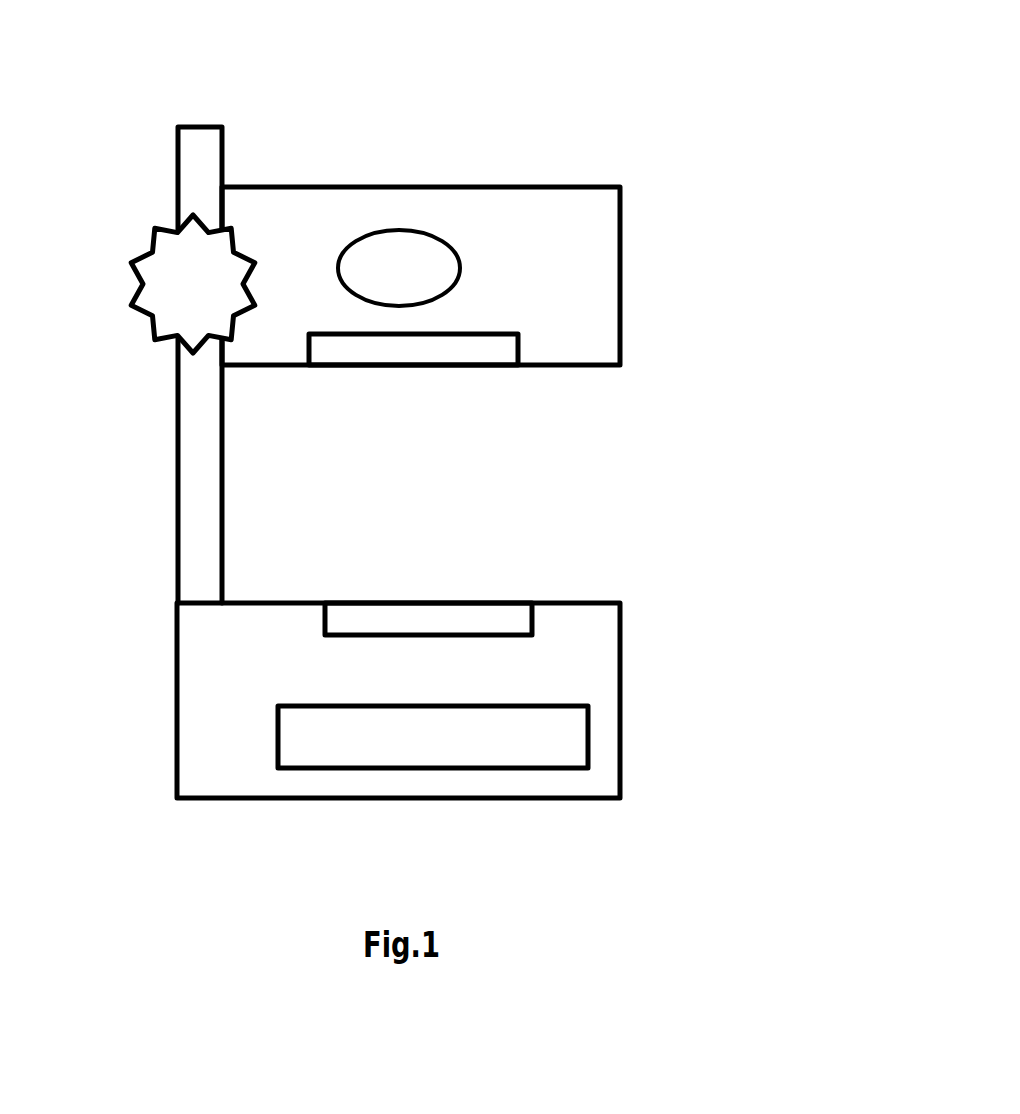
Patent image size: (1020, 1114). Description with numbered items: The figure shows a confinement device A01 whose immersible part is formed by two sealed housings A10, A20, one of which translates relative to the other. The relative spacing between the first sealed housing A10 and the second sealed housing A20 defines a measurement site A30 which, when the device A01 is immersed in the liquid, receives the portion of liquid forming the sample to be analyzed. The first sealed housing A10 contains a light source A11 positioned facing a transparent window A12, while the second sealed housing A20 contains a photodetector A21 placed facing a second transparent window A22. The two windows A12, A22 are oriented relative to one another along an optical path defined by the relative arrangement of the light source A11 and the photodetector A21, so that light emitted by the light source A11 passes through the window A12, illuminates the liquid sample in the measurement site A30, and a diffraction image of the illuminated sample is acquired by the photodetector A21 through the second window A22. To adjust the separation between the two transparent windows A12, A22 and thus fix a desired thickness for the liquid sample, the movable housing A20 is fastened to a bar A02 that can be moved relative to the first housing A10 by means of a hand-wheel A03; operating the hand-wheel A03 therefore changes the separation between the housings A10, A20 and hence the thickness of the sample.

The device A01 is at (697, 98).
The bar A02 is at (177, 463).
The hand-wheel A03 is at (132, 260).
The first sealed housing A10 is at (672, 279).
The light source A11 is at (420, 228).
The transparent window A12 is at (477, 367).
The second sealed housing A20 is at (672, 693).
The photodetector A21 is at (497, 770).
The second transparent window A22 is at (480, 603).
The measurement site A30 is at (380, 514).